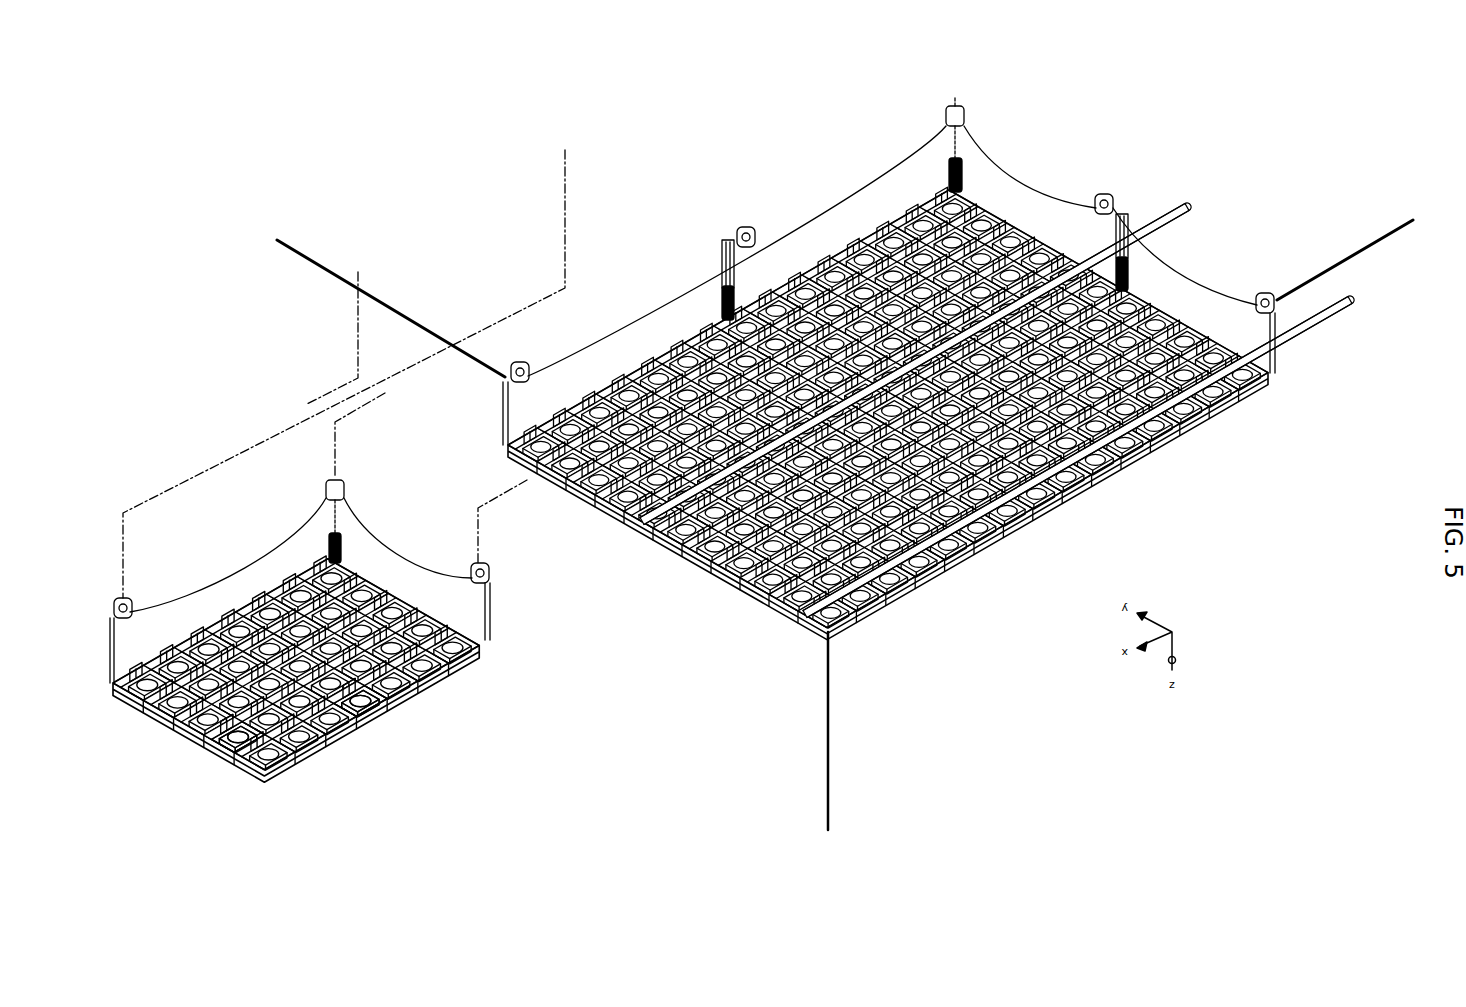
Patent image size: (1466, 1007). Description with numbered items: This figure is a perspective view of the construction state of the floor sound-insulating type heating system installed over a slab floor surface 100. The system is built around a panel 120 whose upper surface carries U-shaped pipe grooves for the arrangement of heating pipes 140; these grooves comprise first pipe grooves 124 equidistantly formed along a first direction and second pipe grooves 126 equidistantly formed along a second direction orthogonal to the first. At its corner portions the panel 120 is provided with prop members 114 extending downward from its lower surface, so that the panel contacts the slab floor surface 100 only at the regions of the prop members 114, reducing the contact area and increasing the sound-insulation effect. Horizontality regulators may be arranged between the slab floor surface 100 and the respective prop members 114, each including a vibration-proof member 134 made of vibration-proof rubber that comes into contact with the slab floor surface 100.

The slab floor surface 100 is at (750, 147).
The heating pipes 140 is at (1160, 207).
The vibration-proof member 134 is at (489, 573).
The prop members 114 is at (488, 627).
The panel 120 is at (350, 745).
The first pipe grooves 124 is at (393, 715).
The second pipe grooves 126 is at (210, 752).